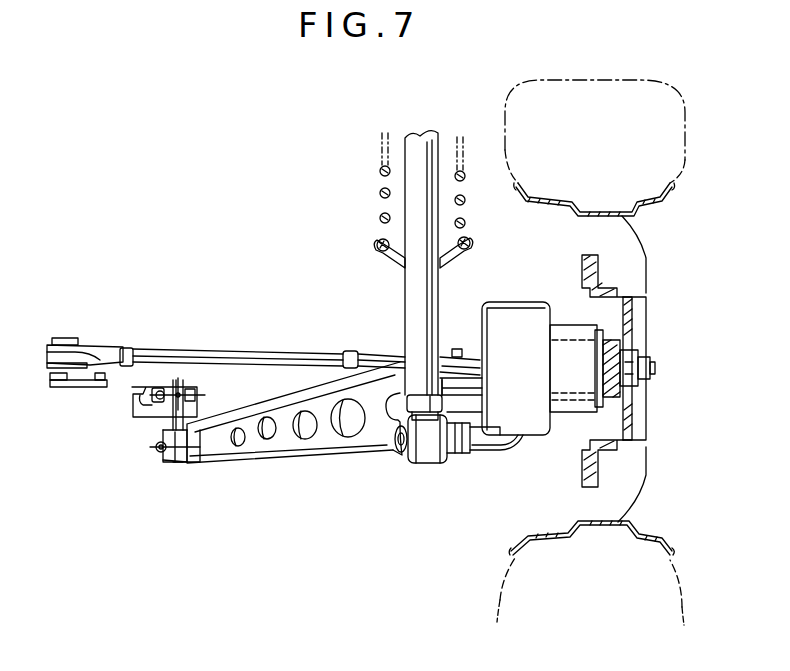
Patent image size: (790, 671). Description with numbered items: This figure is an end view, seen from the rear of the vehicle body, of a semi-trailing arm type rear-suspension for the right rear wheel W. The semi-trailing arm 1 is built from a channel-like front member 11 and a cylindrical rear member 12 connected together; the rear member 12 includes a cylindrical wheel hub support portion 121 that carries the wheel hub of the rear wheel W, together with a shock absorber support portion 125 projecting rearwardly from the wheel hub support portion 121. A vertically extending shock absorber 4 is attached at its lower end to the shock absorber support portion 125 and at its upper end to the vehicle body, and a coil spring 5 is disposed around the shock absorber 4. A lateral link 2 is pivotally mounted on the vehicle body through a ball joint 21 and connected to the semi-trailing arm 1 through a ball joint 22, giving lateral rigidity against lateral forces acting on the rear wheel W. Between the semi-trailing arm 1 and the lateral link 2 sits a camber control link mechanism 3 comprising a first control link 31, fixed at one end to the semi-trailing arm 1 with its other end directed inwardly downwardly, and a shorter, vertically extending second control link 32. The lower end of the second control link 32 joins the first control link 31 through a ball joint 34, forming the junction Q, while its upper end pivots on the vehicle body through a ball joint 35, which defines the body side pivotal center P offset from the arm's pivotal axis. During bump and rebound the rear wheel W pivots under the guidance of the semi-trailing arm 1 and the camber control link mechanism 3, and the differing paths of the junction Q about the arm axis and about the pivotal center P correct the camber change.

The semi-trailing arm 1 is at (503, 285).
The front member 11 is at (470, 343).
The rear member 12 is at (529, 298).
The wheel hub support portion 121 is at (535, 436).
The shock absorber support portion 125 is at (487, 447).
The lateral link 2 is at (226, 338).
The ball joint 21 is at (70, 337).
The ball joint 22 is at (405, 345).
The camber control link mechanism 3 is at (277, 463).
The first control link 31 is at (325, 456).
The second control link 32 is at (172, 428).
The ball joint 34 is at (175, 466).
The ball joint 35 is at (187, 384).
The shock absorber 4 is at (406, 295).
The coil spring 5 is at (376, 193).
The body side pivotal center P is at (173, 382).
The junction Q is at (162, 456).
The rear wheel W is at (641, 76).